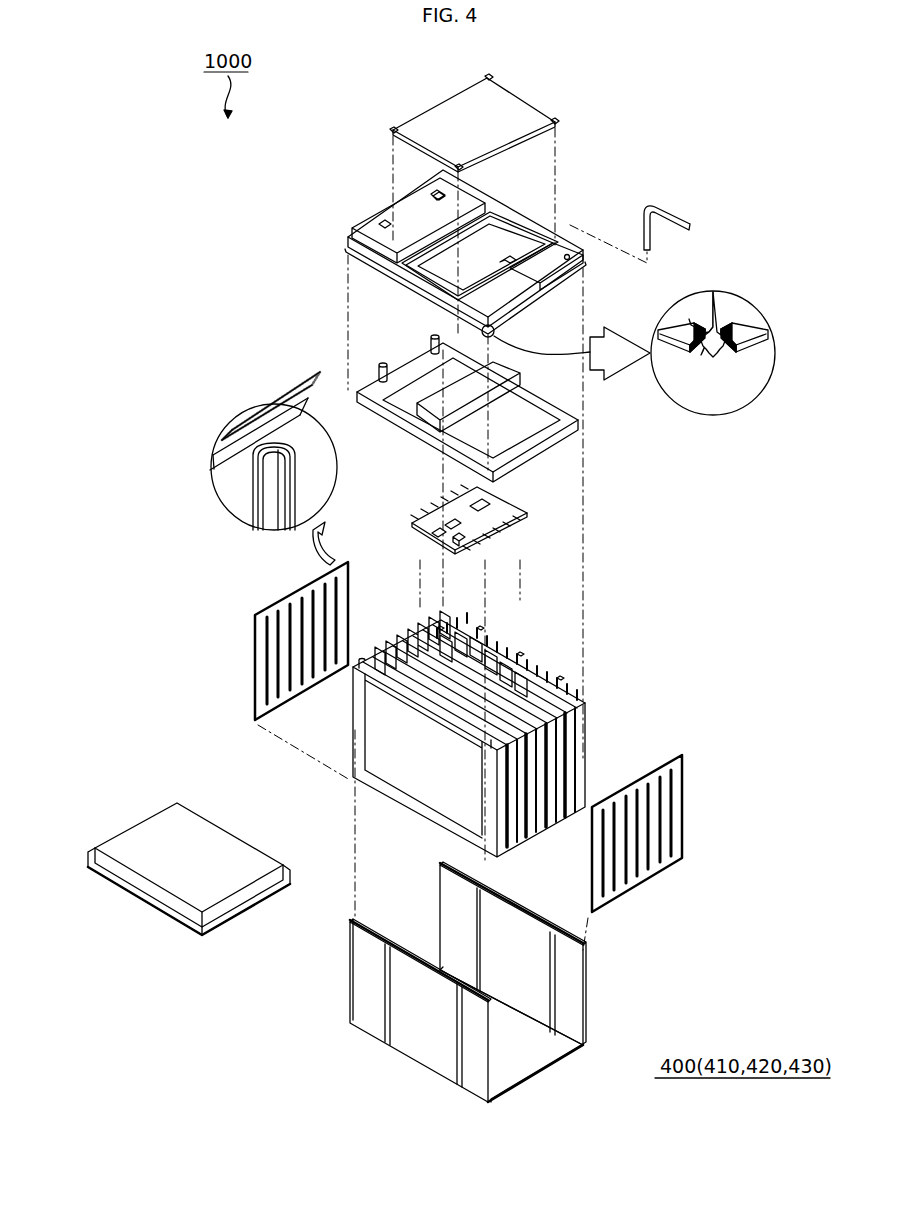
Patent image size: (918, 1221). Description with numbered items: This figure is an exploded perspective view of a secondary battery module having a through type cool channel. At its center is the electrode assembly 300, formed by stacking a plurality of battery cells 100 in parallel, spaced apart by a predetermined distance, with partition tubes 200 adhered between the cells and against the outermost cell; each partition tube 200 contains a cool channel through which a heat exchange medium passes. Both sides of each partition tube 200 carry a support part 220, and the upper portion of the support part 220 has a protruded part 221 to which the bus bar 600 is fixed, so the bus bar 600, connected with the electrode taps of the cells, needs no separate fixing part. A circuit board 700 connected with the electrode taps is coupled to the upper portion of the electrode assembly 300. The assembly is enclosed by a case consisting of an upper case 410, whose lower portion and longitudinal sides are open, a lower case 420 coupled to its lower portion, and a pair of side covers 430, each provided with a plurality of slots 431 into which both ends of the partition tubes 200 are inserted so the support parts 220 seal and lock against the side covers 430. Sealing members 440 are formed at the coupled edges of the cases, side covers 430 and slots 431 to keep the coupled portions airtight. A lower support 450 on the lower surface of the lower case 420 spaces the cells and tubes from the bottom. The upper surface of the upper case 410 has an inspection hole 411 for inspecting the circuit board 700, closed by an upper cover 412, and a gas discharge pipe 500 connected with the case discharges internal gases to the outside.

The battery cell 100 is at (556, 674).
The partition tube 200 is at (585, 730).
The support part 220 is at (580, 697).
The protruded part 221 is at (570, 698).
The electrode assembly 300 is at (544, 711).
The upper case 410 is at (543, 270).
The inspection hole 411 is at (500, 240).
The upper cover 412 is at (445, 118).
The lower case 420 is at (570, 988).
The side cover 430 is at (262, 420).
The slot 431 is at (288, 448).
The sealing member 440 is at (696, 352).
The lower support 450 is at (168, 823).
The gas discharge pipe 500 is at (690, 214).
The bus bar 600 is at (533, 455).
The circuit board 700 is at (510, 510).